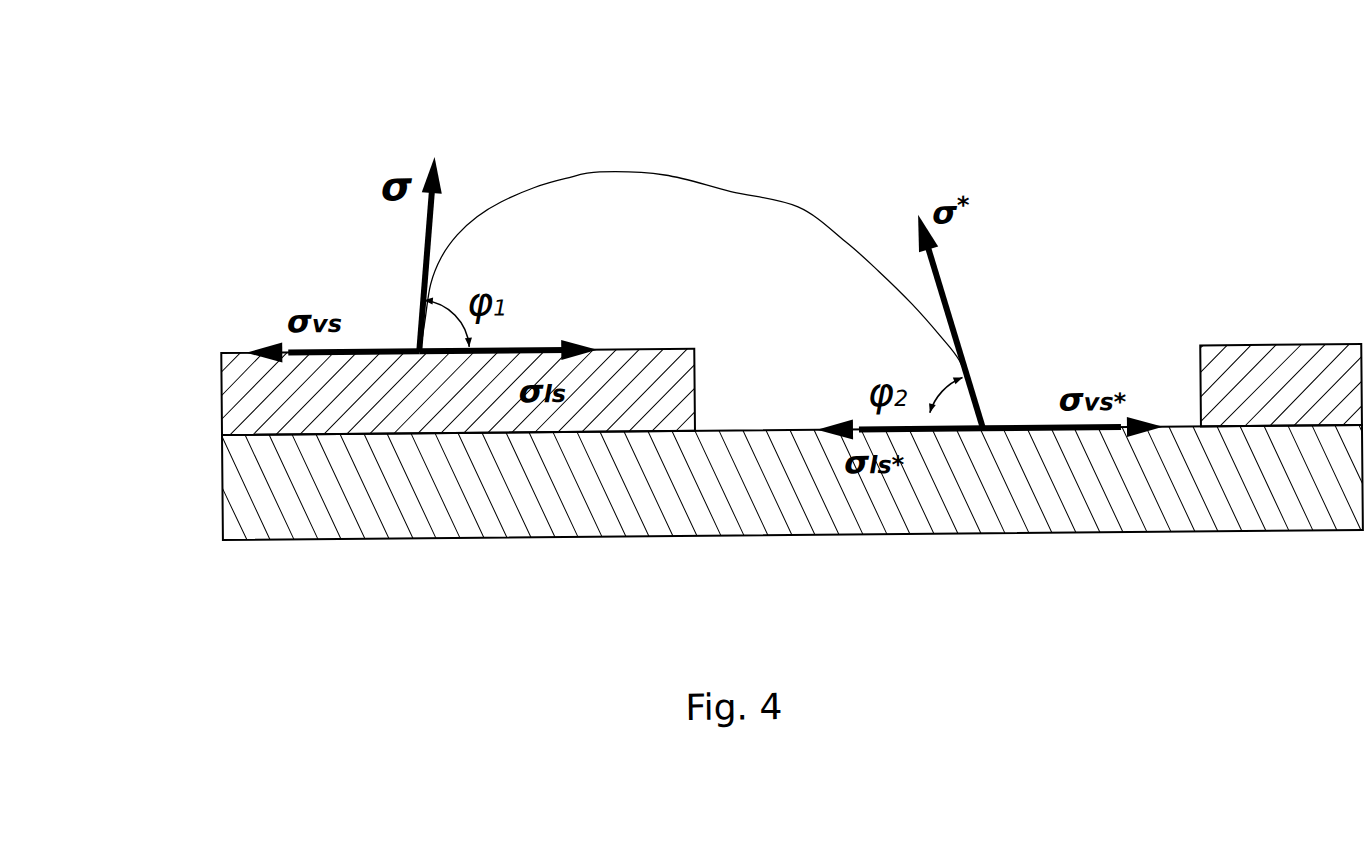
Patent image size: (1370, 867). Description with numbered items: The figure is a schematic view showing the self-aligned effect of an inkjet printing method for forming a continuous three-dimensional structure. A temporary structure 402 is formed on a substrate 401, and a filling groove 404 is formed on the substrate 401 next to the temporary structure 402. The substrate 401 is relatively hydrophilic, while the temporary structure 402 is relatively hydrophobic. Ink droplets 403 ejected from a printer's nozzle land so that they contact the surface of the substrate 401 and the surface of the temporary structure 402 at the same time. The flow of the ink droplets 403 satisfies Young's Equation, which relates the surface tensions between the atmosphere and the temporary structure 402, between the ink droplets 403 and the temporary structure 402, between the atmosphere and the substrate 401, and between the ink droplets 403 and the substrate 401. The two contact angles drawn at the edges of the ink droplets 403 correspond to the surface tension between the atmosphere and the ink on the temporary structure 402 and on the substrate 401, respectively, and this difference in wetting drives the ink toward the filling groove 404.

The substrate 401 is at (232, 490).
The temporary structure 402 is at (232, 393).
The ink droplets 403 is at (670, 192).
The filling groove 404 is at (1058, 338).